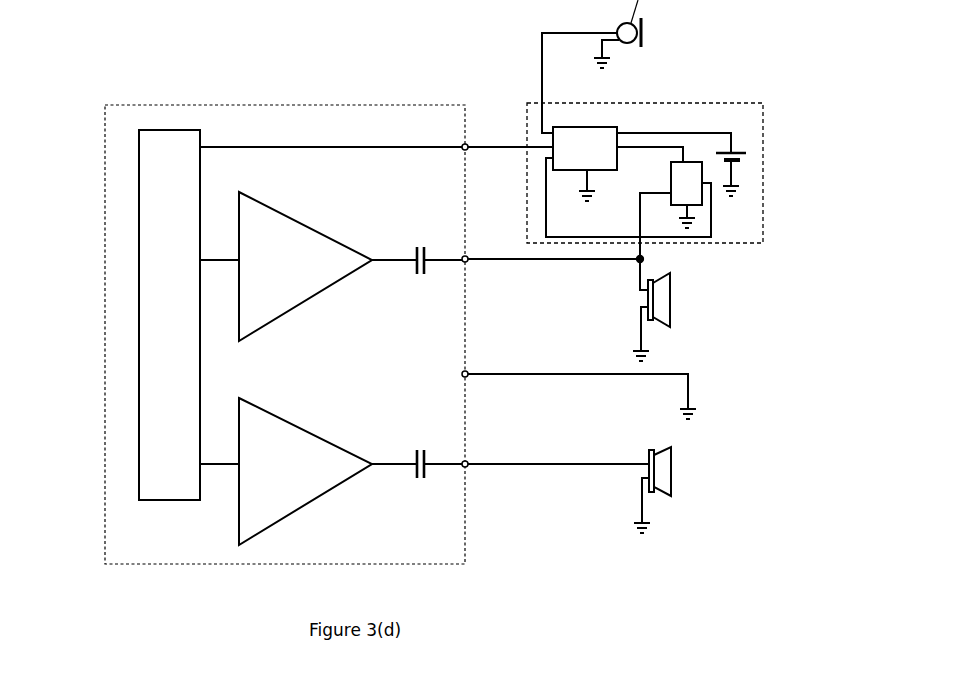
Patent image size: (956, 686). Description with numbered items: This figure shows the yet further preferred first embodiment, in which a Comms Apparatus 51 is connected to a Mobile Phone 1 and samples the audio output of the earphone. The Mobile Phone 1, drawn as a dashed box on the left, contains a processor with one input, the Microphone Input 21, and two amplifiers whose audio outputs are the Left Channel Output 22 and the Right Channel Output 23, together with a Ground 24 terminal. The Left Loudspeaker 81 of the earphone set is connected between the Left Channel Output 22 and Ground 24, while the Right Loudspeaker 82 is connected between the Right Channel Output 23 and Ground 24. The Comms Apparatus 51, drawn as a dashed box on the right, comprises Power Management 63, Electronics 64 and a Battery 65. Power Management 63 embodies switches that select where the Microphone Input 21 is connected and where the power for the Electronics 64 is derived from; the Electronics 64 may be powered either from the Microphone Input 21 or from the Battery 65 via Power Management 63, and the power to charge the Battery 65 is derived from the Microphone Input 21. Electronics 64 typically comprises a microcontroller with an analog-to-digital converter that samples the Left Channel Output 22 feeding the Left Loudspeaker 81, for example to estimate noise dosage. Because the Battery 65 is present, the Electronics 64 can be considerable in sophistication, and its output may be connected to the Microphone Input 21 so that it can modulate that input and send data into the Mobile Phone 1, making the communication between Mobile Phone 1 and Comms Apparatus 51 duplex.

The mobile phone 1 is at (80, 458).
The microphone input 21 is at (468, 144).
The left channel output 22 is at (467, 262).
The right channel output 23 is at (468, 461).
The ground 24 is at (467, 377).
The comms apparatus 51 is at (756, 64).
The power management 63 is at (605, 128).
The electronics 64 is at (690, 198).
The battery 65 is at (742, 150).
The left loudspeaker 81 is at (665, 303).
The right loudspeaker 82 is at (665, 467).